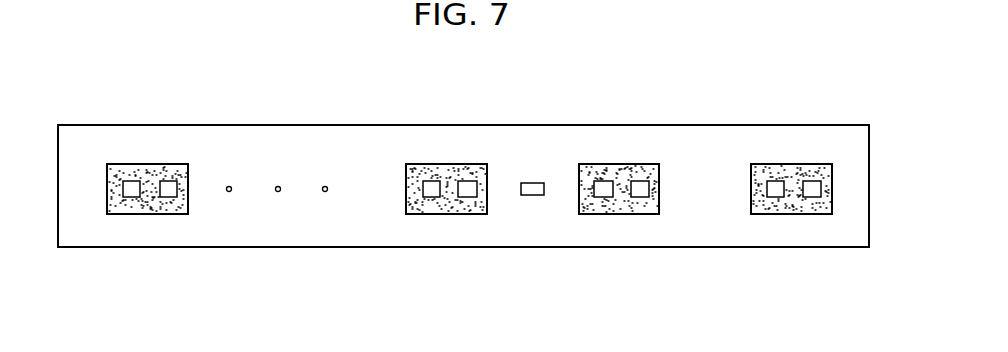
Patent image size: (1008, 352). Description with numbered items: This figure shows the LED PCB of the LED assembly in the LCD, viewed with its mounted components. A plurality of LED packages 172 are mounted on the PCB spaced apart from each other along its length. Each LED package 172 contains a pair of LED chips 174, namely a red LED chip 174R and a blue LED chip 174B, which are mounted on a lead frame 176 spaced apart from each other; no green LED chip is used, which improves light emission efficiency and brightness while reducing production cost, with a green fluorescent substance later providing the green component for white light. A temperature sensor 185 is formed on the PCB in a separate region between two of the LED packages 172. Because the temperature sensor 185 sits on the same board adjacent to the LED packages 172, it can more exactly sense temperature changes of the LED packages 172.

The LED package 172 is at (448, 170).
The LED chips 174 is at (146, 119).
The blue LED chip 174B is at (127, 180).
The red LED chip 174R is at (168, 180).
The lead frame 176 is at (307, 148).
The temperature sensor 185 is at (531, 182).